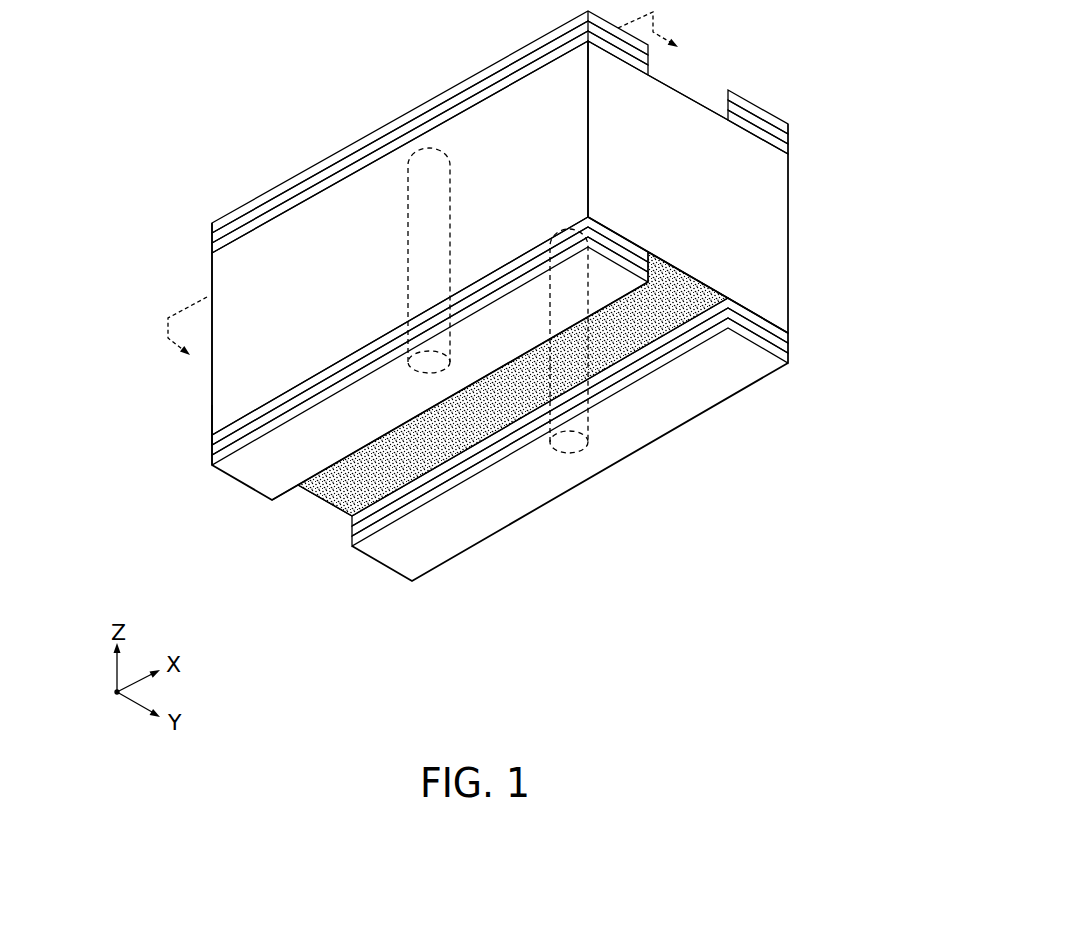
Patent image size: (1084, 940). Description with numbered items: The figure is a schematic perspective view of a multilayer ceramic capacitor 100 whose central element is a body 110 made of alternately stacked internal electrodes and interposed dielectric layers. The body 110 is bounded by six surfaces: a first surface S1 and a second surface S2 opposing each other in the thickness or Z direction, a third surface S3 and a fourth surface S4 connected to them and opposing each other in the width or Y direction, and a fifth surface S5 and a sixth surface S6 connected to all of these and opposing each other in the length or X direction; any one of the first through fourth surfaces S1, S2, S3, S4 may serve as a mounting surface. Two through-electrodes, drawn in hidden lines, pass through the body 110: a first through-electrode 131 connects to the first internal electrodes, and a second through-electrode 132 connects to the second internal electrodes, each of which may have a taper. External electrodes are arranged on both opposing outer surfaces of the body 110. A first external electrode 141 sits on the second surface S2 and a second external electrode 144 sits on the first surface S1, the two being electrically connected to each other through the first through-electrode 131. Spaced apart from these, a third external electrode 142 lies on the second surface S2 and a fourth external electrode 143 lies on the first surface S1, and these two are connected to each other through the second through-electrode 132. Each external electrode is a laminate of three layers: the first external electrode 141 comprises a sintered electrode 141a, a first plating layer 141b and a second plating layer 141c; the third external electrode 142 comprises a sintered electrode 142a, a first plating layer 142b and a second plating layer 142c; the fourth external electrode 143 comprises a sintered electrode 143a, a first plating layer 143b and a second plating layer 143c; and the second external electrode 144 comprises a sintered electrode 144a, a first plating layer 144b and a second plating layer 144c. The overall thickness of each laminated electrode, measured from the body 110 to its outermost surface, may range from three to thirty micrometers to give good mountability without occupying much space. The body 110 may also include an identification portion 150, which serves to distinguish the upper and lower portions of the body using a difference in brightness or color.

The multilayer ceramic capacitor 100 is at (303, 54).
The body 110 is at (488, 317).
The first through-electrode 131 is at (429, 373).
The second through-electrode 132 is at (569, 453).
The first external electrode 141 is at (358, 404).
The sintered electrode 141a is at (212, 440).
The first plating layer 141b is at (212, 450).
The second plating layer 141c is at (212, 460).
The third external electrode 142 is at (640, 439).
The sintered electrode 142a is at (788, 338).
The first plating layer 142b is at (788, 348).
The second plating layer 142c is at (788, 358).
The fourth external electrode 143 is at (828, 142).
The sintered electrode 143a is at (788, 149).
The first plating layer 143b is at (788, 139).
The second plating layer 143c is at (788, 129).
The second external electrode 144 is at (356, 151).
The sintered electrode 144a is at (212, 250).
The first plating layer 144b is at (212, 238).
The second plating layer 144c is at (212, 228).
The identification portion 150 is at (212, 432).
The first surface S1 is at (343, 197).
The second surface S2 is at (405, 471).
The third surface S3 is at (282, 237).
The fourth surface S4 is at (698, 391).
The fifth surface S5 is at (270, 481).
The sixth surface S6 is at (673, 125).